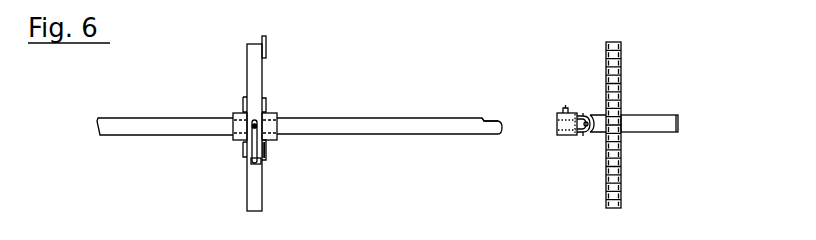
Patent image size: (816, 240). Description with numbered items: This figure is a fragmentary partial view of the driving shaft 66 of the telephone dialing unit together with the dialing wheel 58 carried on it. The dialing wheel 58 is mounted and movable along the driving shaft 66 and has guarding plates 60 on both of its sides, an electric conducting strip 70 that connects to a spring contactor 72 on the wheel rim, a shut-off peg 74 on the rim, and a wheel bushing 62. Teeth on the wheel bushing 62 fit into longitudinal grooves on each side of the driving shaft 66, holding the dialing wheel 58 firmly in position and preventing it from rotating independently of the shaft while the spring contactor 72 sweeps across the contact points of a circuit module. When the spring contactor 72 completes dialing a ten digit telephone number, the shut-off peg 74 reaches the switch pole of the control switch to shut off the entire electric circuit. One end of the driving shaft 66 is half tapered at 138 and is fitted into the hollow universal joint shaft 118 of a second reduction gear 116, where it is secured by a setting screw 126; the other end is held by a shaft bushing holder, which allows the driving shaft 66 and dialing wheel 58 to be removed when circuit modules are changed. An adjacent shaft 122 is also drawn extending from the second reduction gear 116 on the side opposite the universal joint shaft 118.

The dialing wheel 58 is at (249, 79).
The guarding plates 60 is at (265, 103).
The wheel bushing 62 is at (276, 140).
The driving shaft 66 is at (379, 123).
The electric conducting strip 70 is at (262, 159).
The spring contactor 72 is at (248, 163).
The shut-off peg 74 is at (267, 47).
The second reduction gear 116 is at (622, 177).
The hollow universal joint shaft 118 is at (583, 133).
The shaft 122 is at (657, 120).
The setting screw 126 is at (565, 110).
The half tapered end 138 is at (485, 117).